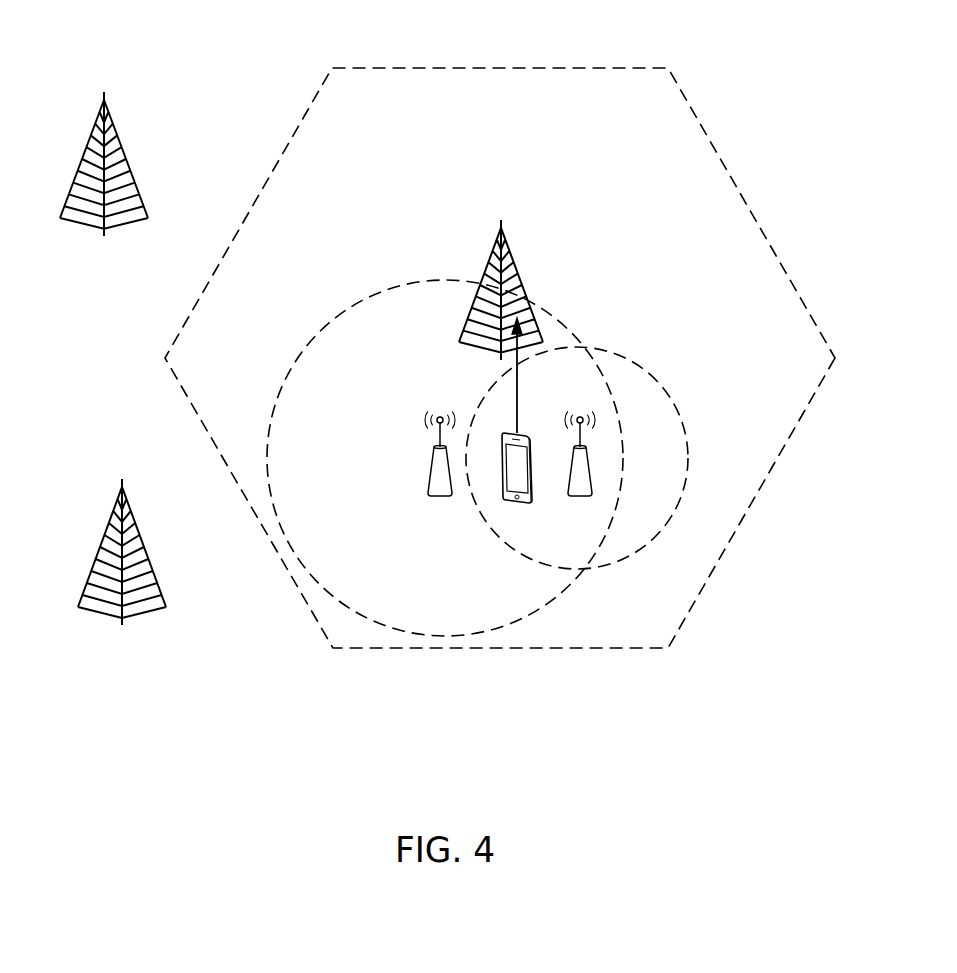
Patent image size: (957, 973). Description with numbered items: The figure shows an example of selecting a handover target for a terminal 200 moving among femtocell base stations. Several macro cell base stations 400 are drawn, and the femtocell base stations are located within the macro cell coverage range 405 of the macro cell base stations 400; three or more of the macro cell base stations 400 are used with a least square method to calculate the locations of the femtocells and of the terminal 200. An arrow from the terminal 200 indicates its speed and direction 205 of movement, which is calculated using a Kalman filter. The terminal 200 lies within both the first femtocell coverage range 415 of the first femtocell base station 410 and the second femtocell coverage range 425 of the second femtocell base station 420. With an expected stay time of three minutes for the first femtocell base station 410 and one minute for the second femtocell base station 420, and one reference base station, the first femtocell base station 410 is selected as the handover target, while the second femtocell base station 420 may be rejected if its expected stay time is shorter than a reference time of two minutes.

The macro cell coverage range 405 is at (510, 68).
The first femtocell coverage range 415 is at (374, 283).
The second femtocell coverage range 425 is at (683, 433).
The macro cell base station 400 is at (155, 141).
The first femtocell base station 410 is at (437, 497).
The second femtocell base station 420 is at (578, 497).
The terminal 200 is at (517, 505).
The speed and direction of movement 205 is at (517, 385).